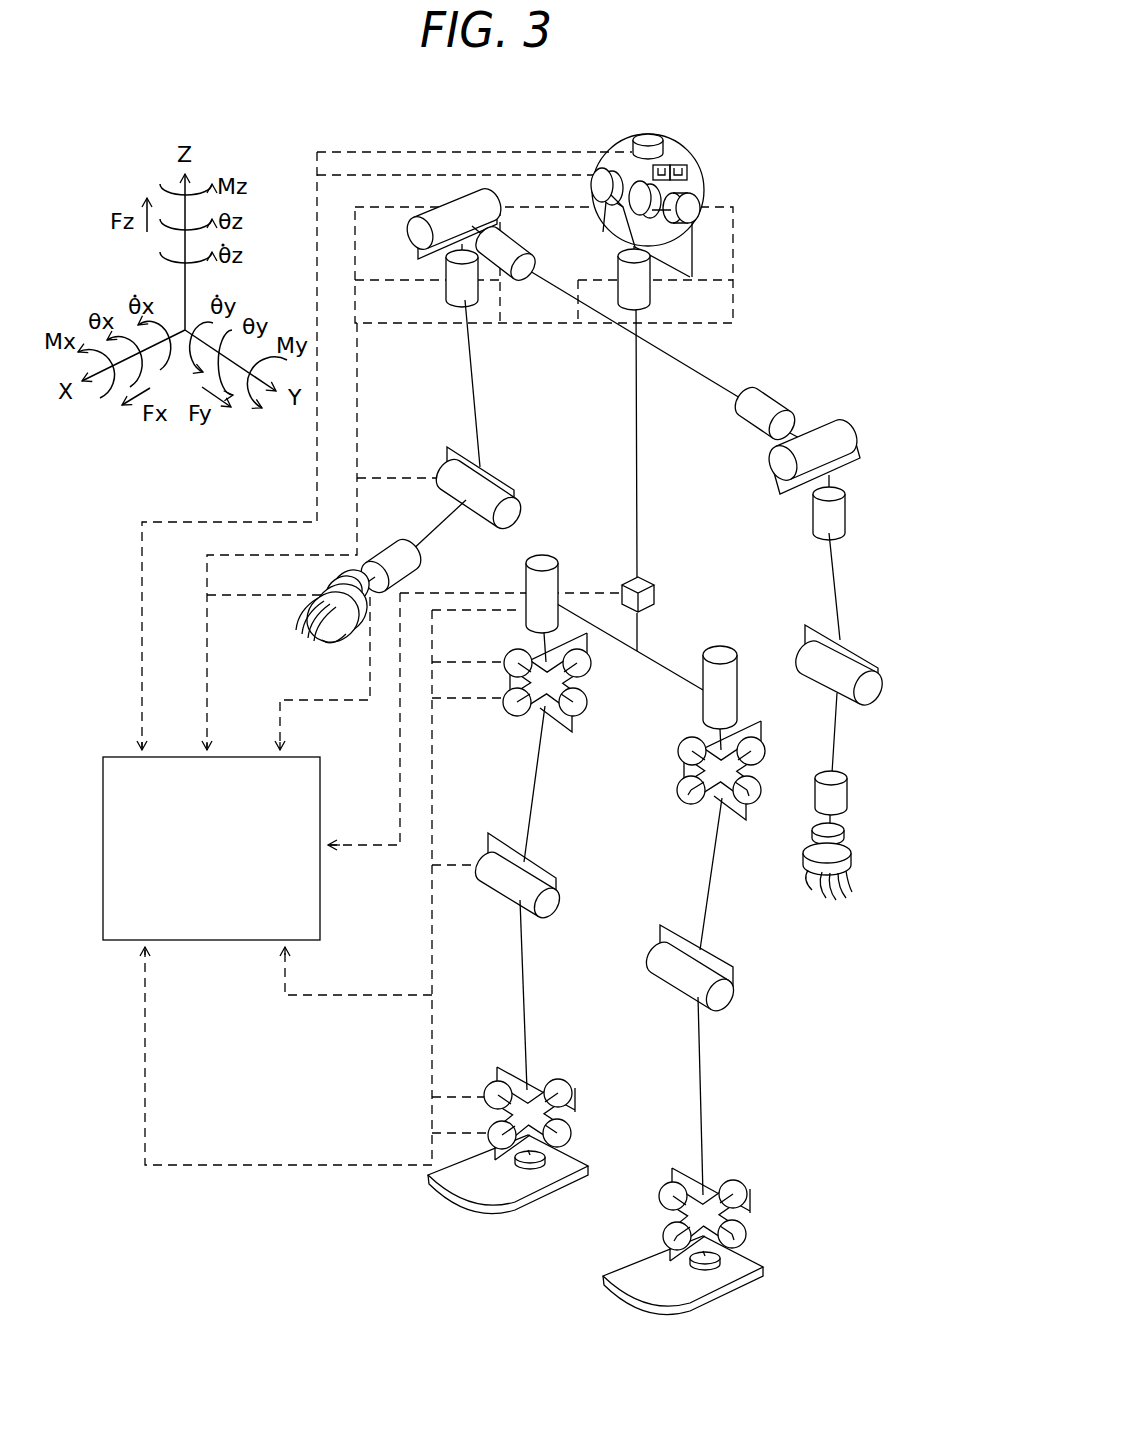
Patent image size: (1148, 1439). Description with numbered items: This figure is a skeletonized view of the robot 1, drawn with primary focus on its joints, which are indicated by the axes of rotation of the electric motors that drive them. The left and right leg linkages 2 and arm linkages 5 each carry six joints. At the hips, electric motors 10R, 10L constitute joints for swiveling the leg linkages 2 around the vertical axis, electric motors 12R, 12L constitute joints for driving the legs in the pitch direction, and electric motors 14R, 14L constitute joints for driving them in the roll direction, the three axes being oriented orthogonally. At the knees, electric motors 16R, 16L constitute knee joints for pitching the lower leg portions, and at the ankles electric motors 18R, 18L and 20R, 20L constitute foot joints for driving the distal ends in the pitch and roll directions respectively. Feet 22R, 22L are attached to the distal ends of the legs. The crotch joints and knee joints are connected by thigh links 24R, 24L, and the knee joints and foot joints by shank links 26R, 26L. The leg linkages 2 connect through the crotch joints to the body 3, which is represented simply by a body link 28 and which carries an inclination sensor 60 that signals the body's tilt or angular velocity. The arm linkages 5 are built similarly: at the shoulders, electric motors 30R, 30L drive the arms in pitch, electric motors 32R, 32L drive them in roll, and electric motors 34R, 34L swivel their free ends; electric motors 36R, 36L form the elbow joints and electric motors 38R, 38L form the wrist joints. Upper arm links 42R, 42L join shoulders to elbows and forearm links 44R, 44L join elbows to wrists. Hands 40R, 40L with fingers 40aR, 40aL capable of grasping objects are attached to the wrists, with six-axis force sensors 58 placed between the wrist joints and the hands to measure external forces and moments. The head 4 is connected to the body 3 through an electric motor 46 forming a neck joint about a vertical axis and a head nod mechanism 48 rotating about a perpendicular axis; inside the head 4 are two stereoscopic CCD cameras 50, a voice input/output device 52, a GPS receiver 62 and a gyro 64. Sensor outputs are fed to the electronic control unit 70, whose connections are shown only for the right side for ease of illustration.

The robot 1 is at (792, 321).
The leg linkages 2 is at (751, 935).
The body 3 is at (658, 457).
The head 4 is at (662, 172).
The arm linkages 5 is at (868, 626).
The electric motor 10R is at (545, 560).
The electric motor 10L is at (726, 662).
The electric motor 12R is at (513, 688).
The electric motor 12L is at (754, 802).
The electric motor 14R is at (512, 704).
The electric motor 14L is at (746, 786).
The electric motor 16R is at (560, 900).
The electric motor 16L is at (730, 995).
The electric motor 18R is at (569, 1090).
The electric motor 18L is at (742, 1196).
The electric motor 20R is at (558, 1088).
The electric motor 20L is at (735, 1193).
The foot 22R is at (517, 1197).
The foot 22L is at (720, 1275).
The thigh link 24R is at (535, 812).
The thigh link 24L is at (713, 890).
The shank link 26R is at (521, 968).
The shank link 26L is at (702, 1080).
The body link 28 is at (640, 528).
The electric motor 30R is at (505, 250).
The electric motor 30L is at (760, 398).
The electric motor 32R is at (478, 205).
The electric motor 32L is at (836, 440).
The electric motor 34R is at (450, 294).
The electric motor 34L is at (840, 516).
The electric motor 36R is at (512, 497).
The electric motor 36L is at (874, 684).
The electric motor 38R is at (406, 565).
The electric motor 38L is at (848, 796).
The hand 40R is at (297, 634).
The hand 40L is at (872, 894).
The fingers 40aR is at (296, 628).
The fingers 40aL is at (848, 894).
The upper arm link 42R is at (479, 406).
The upper arm link 42L is at (838, 574).
The forearm link 44R is at (440, 521).
The forearm link 44L is at (836, 752).
The electric motor 46 is at (651, 290).
The head nod mechanism 48 is at (692, 210).
The CCD cameras 50 is at (612, 236).
The voice input/output device 52 is at (645, 134).
The six-axis force sensor 58 is at (326, 586).
The inclination sensor 60 is at (657, 590).
The GPS receiver 62 is at (665, 165).
The gyro 64 is at (680, 166).
The electronic control unit 70 is at (120, 757).